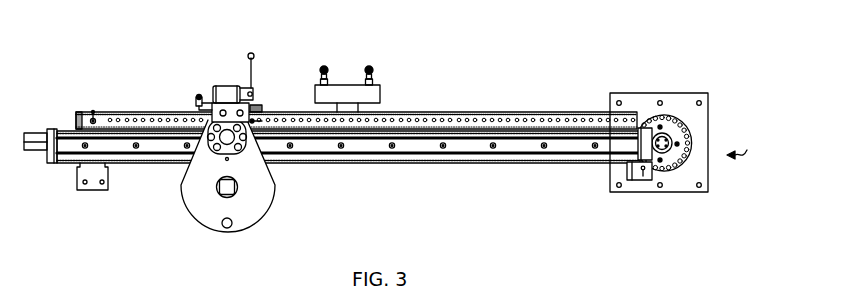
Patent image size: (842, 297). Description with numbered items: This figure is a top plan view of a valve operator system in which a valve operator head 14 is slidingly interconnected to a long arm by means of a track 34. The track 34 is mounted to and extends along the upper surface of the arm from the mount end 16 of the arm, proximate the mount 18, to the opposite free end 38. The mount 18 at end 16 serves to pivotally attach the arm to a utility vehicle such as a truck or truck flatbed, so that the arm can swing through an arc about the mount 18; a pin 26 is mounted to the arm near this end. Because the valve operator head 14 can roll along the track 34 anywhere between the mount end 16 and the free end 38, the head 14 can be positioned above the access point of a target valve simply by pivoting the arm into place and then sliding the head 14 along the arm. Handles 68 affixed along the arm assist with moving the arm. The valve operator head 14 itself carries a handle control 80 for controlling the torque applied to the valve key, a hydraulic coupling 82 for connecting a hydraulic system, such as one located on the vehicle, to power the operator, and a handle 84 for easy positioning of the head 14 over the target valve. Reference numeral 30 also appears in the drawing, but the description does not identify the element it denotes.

The valve operator head 14 is at (188, 213).
The end of arm 16 is at (640, 130).
The mount 18 is at (741, 171).
The pin 26 is at (632, 180).
The sprocket 30 is at (670, 115).
The track 34 is at (473, 157).
The free end 38 is at (47, 153).
The handles 68 is at (377, 70).
The handle control 80 is at (255, 64).
The hydraulic coupling 82 is at (196, 96).
The handle 84 is at (232, 224).